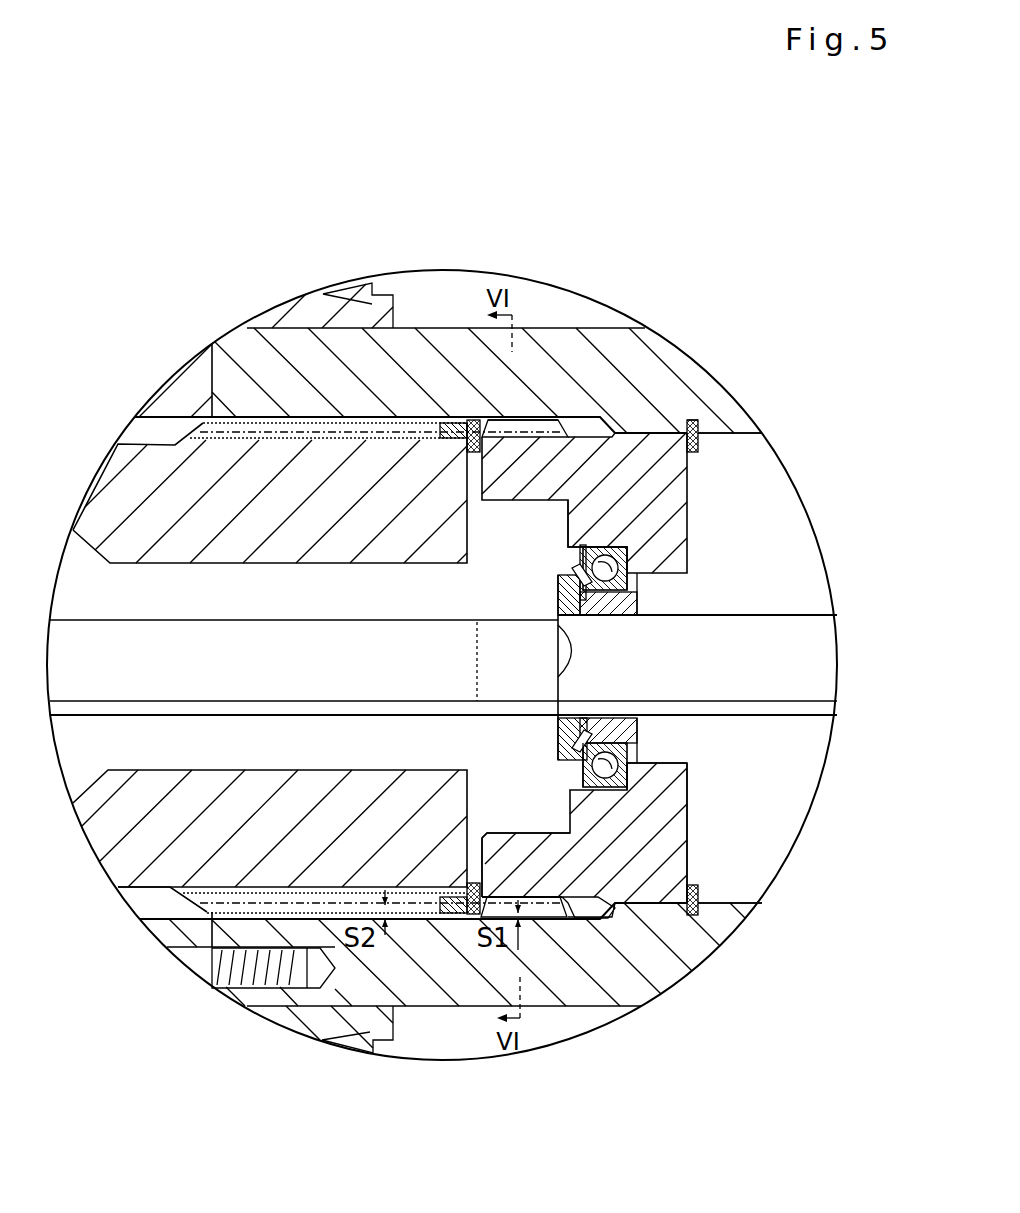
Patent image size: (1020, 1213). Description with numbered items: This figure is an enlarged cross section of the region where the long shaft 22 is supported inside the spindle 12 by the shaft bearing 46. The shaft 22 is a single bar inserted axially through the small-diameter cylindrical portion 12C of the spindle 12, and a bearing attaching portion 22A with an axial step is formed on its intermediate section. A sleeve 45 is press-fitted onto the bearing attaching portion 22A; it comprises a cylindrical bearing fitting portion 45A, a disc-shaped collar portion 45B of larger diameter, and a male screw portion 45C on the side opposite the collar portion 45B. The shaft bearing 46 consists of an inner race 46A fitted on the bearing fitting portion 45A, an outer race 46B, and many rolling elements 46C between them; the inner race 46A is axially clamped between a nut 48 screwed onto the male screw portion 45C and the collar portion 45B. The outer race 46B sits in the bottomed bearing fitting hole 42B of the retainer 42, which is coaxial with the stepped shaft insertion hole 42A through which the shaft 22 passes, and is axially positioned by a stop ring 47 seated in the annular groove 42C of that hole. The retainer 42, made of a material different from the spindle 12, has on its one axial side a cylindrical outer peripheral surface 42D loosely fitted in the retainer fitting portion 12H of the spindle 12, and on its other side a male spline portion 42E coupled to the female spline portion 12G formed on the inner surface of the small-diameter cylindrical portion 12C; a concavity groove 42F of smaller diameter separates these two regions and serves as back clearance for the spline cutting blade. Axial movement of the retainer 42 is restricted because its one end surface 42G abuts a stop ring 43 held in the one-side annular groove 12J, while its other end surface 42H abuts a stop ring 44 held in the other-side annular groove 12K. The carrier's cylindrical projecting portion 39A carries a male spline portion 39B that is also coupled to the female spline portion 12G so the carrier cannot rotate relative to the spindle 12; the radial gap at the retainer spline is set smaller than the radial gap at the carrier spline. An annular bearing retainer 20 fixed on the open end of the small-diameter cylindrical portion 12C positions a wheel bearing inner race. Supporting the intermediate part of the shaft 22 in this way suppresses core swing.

The spindle 12 is at (589, 316).
The small-diameter cylindrical portion 12C is at (255, 385).
The female spline portion 12G is at (568, 425).
The retainer fitting portion 12H is at (712, 442).
The one-side annular groove 12J is at (693, 425).
The other-side annular groove 12K is at (482, 425).
The annular bearing retainer 20 is at (185, 400).
The shaft 22 is at (97, 660).
The bearing attaching portion 22A is at (558, 615).
The cylindrical projecting portion 39A is at (147, 832).
The male spline portion 39B is at (318, 430).
The retainer 42 is at (620, 845).
The shaft insertion hole 42A is at (518, 830).
The bearing fitting hole 42B is at (627, 767).
The annular groove 42C is at (584, 547).
The cylindrical outer peripheral surface 42D is at (700, 950).
The male spline portion 42E is at (528, 418).
The concavity groove 42F is at (600, 927).
The one end surface 42G is at (688, 828).
The other end surface 42H is at (458, 875).
The stop ring 43 is at (698, 440).
The stop ring 44 is at (468, 428).
The sleeve 45 is at (640, 742).
The bearing fitting portion 45A is at (583, 772).
The collar portion 45B is at (633, 747).
The male screw portion 45C is at (565, 745).
The shaft bearing 46 is at (612, 566).
The inner race 46A is at (637, 592).
The outer race 46B is at (628, 548).
The rolling elements 46C is at (627, 574).
The stop ring 47 is at (580, 560).
The nut 48 is at (570, 595).